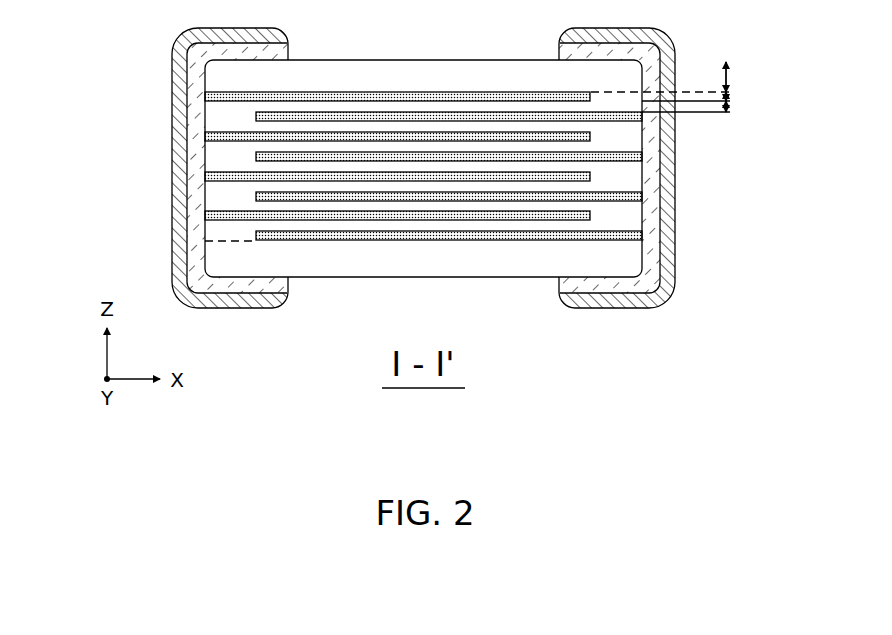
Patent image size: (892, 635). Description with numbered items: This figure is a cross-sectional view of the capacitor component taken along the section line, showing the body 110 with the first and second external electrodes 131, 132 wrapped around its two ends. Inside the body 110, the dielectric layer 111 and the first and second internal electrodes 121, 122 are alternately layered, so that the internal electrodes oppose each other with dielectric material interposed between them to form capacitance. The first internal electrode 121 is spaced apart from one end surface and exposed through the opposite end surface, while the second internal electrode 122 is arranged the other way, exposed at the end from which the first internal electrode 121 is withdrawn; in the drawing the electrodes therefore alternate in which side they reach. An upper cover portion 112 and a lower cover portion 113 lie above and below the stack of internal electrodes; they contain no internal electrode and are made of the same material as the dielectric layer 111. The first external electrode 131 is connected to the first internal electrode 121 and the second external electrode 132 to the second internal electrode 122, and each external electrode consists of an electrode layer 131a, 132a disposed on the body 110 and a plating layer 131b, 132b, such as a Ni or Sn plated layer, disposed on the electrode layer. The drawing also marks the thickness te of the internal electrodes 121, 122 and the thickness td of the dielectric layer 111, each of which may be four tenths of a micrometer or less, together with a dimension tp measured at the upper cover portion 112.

The body 110 is at (362, 60).
The dielectric layer 111 is at (317, 130).
The upper cover portion 112 is at (437, 72).
The lower cover portion 113 is at (437, 258).
The first internal electrode 121 is at (483, 100).
The second internal electrode 122 is at (538, 117).
The first external electrode 131 is at (160, 168).
The electrode layer 131a is at (181, 104).
The plating layer 131b is at (193, 128).
The second external electrode 132 is at (685, 168).
The electrode layer 132a is at (667, 177).
The plating layer 132b is at (651, 201).
The thickness of cover portion tp is at (728, 77).
The thickness of internal electrode te is at (728, 97).
The thickness of dielectric layer td is at (728, 108).